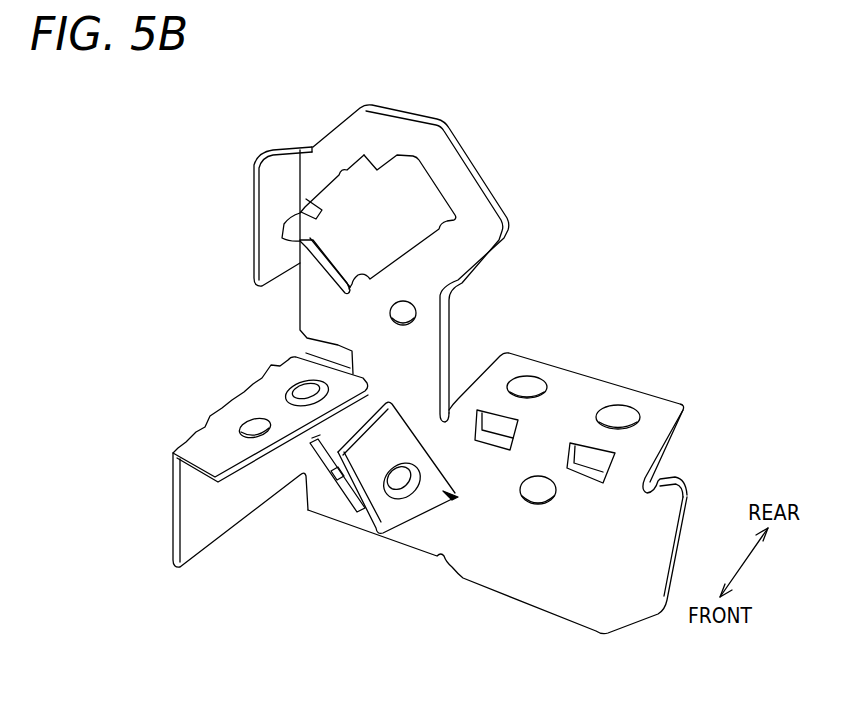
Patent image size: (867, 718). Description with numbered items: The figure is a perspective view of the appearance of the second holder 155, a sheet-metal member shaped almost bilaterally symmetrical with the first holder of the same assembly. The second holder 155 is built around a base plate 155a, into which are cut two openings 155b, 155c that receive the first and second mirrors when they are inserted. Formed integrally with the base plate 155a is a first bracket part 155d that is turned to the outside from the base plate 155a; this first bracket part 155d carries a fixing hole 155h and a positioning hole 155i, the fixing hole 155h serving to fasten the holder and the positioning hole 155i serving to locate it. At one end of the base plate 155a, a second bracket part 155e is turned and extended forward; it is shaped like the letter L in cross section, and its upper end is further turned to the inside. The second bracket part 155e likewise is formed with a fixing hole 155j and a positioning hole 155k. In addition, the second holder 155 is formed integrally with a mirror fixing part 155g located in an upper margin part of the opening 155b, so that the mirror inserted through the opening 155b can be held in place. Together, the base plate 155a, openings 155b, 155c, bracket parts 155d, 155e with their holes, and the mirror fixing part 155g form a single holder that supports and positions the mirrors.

The second holder 155 is at (201, 214).
The base plate 155a is at (523, 590).
The opening 155b is at (421, 180).
The opening 155c is at (337, 480).
The first bracket part 155d is at (575, 380).
The second bracket part 155e is at (203, 443).
The mirror fixing part 155g is at (397, 513).
The fixing hole 155h is at (623, 406).
The positioning hole 155i is at (528, 377).
The fixing hole 155j is at (300, 380).
The positioning hole 155k is at (248, 420).